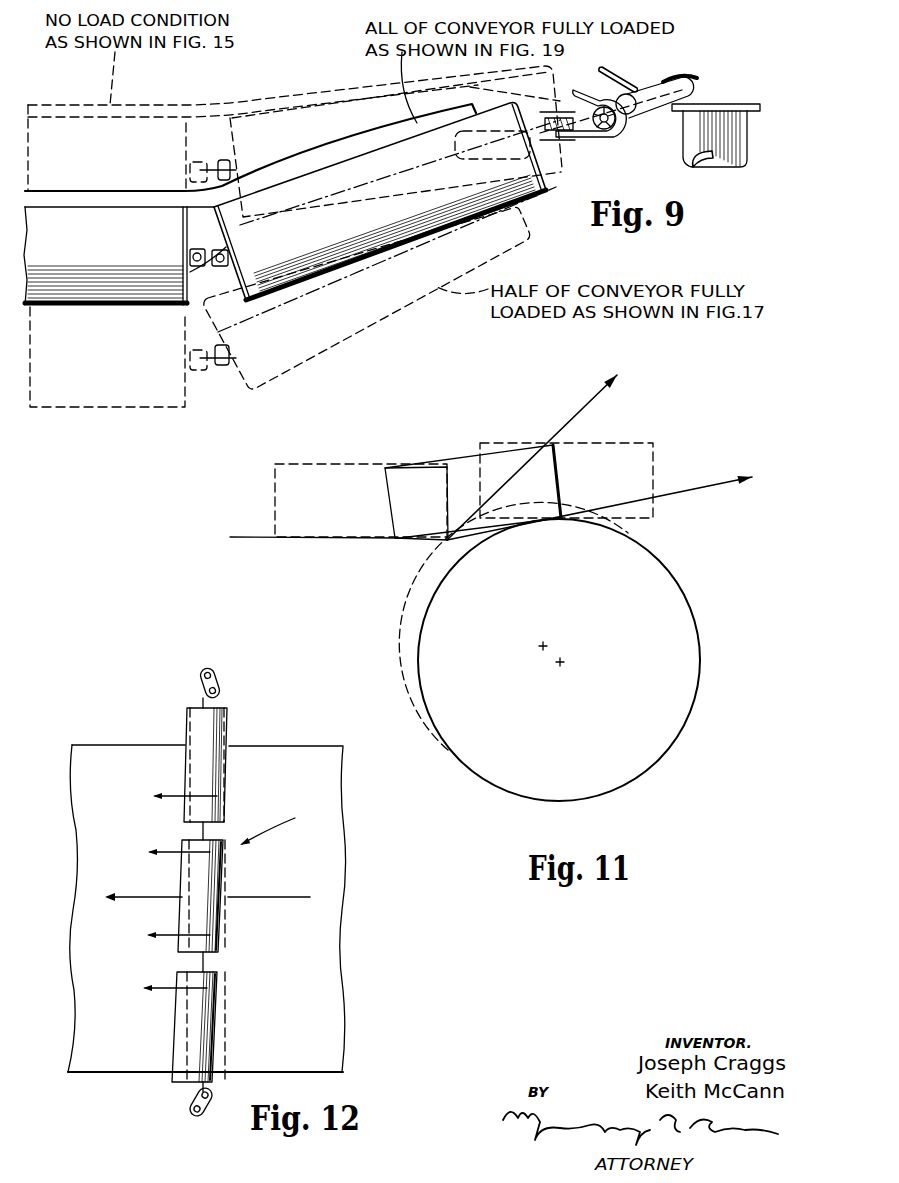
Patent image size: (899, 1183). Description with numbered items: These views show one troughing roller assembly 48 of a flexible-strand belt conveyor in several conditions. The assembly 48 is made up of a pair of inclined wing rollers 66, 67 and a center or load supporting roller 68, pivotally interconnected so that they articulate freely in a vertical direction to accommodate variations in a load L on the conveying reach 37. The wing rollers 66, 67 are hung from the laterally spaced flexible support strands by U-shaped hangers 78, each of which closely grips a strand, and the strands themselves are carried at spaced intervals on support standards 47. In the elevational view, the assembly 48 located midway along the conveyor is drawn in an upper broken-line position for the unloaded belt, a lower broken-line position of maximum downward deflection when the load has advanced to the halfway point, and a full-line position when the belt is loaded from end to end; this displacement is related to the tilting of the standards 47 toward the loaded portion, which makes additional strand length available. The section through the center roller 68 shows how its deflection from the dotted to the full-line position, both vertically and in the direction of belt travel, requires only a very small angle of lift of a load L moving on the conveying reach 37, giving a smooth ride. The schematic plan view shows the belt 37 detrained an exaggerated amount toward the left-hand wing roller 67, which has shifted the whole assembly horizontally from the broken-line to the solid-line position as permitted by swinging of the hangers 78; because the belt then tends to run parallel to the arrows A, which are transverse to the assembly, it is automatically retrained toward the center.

In FIG. 9, the conveying reach 37 is at (133, 195).
In FIG. 11, the conveying reach 37 is at (703, 490).
In FIG. 12, the conveying reach 37 is at (328, 980).
In FIG. 9, the troughing roller assembly 48 is at (133, 310).
In FIG. 12, the troughing roller assembly 48 is at (300, 817).
In FIG. 9, the support standard 47 is at (725, 104).
In FIG. 11, the center or load supporting roller 68 is at (700, 690).
In FIG. 12, the center or load supporting roller 68 is at (222, 872).
In FIG. 12, the wing roller 66 is at (187, 730).
In FIG. 12, the wing roller 67 is at (214, 1026).
In FIG. 12, the U-shaped hanger 78 is at (204, 681).
In FIG. 11, the load L is at (372, 463).
In FIG. 12, the arrows A is at (215, 796).